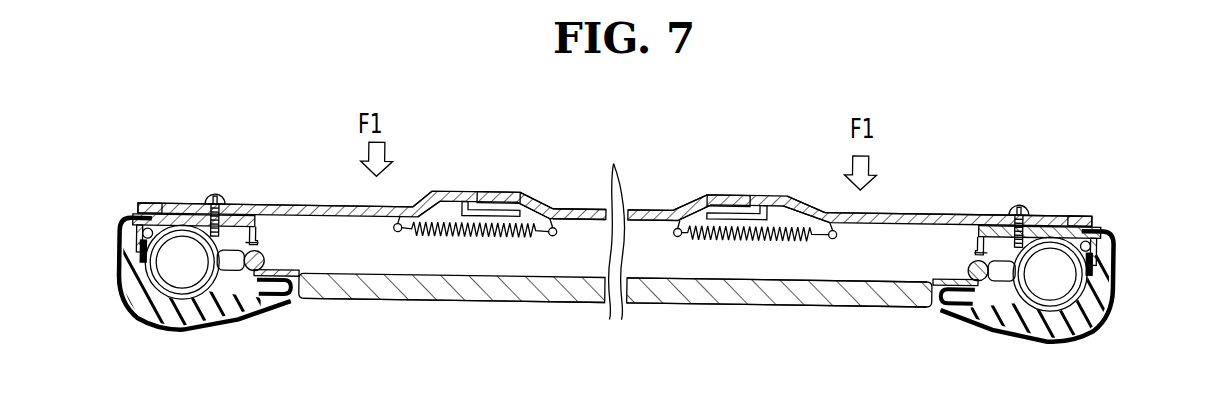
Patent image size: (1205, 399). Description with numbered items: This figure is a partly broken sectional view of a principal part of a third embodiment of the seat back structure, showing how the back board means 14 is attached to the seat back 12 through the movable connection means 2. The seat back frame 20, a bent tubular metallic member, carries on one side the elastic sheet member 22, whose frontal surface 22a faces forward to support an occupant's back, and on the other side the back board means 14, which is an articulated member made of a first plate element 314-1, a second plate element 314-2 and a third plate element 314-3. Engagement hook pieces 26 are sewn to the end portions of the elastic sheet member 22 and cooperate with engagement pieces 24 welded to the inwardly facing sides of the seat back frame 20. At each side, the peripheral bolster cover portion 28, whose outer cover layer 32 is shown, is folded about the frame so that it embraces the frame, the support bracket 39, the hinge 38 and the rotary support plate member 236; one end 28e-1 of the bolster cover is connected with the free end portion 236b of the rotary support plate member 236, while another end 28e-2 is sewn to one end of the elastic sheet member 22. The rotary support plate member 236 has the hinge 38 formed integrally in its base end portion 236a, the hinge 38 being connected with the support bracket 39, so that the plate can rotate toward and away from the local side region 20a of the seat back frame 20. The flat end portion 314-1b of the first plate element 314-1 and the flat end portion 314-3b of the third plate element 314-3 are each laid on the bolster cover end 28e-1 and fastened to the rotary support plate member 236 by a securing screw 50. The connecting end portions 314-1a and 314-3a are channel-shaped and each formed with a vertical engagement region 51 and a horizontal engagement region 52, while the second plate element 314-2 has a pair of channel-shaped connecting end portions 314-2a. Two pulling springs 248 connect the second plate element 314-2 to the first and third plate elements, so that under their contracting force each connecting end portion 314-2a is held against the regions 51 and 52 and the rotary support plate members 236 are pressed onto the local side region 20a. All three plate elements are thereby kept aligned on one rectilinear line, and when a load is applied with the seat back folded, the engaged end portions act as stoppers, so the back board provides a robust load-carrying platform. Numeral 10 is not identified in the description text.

The movable connection means 2 is at (288, 324).
The display device 10 is at (839, 342).
The seat back 12 is at (190, 106).
The back board means 14 is at (838, 113).
The seat back frame 20 is at (220, 288).
The local side region of the seat back frame 20a is at (616, 268).
The elastic sheet member 22 is at (443, 300).
The frontal surface of the elastic sheet member 22a is at (530, 307).
The engagement piece 24 is at (280, 271).
The engagement hook piece 26 is at (265, 254).
The peripheral bolster cover portion 28 is at (185, 333).
The one end of the peripheral bolster cover portion 28e-1 is at (260, 235).
The another end of the peripheral bolster cover portion 28e-2 is at (298, 302).
The outer cover layer 32 is at (152, 320).
The hinge 38 is at (143, 265).
The support bracket 39 is at (124, 300).
The securing screw 50 is at (215, 195).
The vertical engagement region 51 is at (466, 195).
The horizontal engagement region 52 is at (500, 189).
The rotary support plate member 236 is at (186, 212).
The base end portion of the rotary support plate member 236a is at (128, 218).
The free end portion of the rotary support plate member 236b is at (258, 232).
The pulling spring 248 is at (523, 243).
The first plate element 314-1 is at (300, 203).
The connecting end portion of the first plate element 314-1a is at (435, 188).
The flat end portion of the first plate element 314-1b is at (148, 203).
The second plate element 314-2 is at (612, 226).
The connecting end portion of the second plate element 314-2a is at (538, 185).
The third plate element 314-3 is at (935, 215).
The connecting end portion of the third plate element 314-3a is at (798, 190).
The flat end portion of the third plate element 314-3b is at (1085, 215).